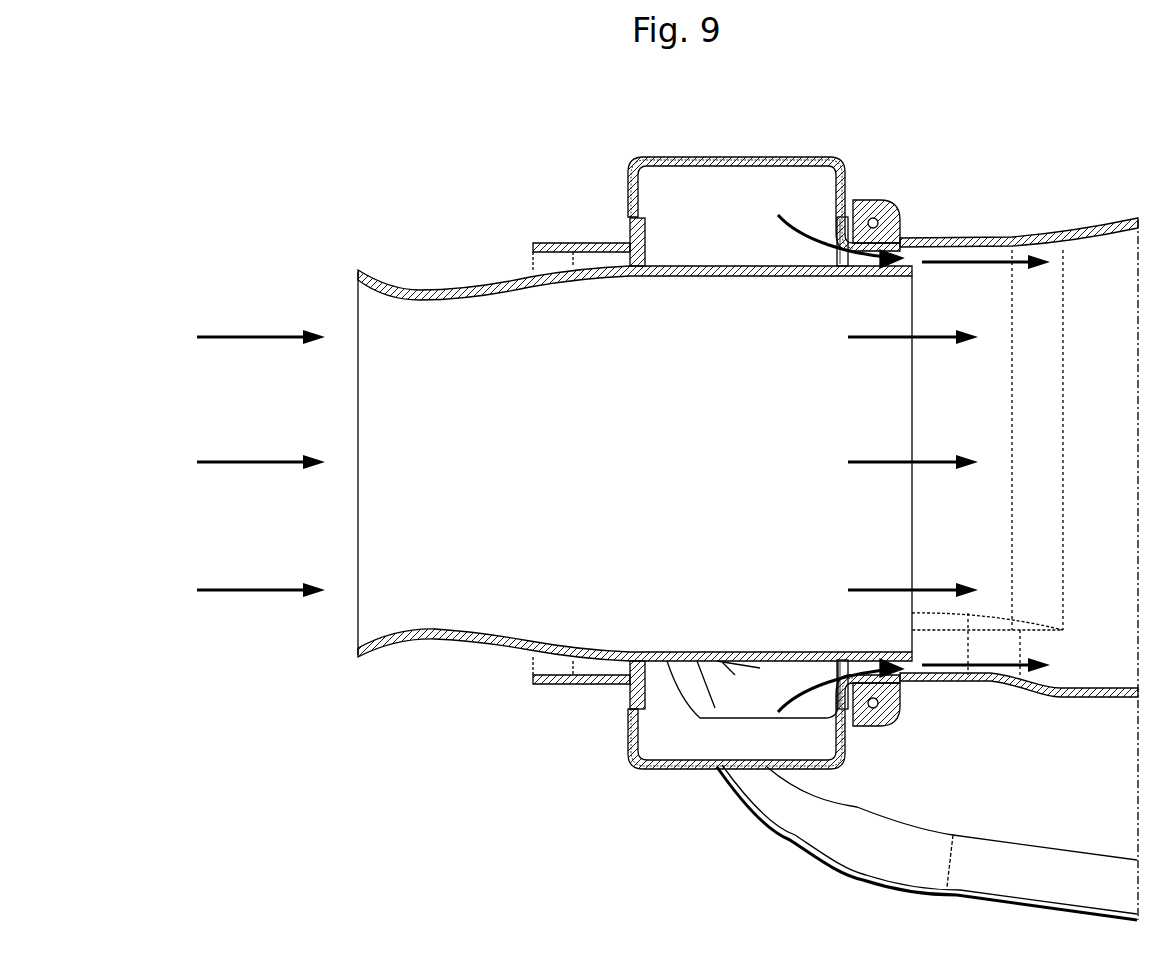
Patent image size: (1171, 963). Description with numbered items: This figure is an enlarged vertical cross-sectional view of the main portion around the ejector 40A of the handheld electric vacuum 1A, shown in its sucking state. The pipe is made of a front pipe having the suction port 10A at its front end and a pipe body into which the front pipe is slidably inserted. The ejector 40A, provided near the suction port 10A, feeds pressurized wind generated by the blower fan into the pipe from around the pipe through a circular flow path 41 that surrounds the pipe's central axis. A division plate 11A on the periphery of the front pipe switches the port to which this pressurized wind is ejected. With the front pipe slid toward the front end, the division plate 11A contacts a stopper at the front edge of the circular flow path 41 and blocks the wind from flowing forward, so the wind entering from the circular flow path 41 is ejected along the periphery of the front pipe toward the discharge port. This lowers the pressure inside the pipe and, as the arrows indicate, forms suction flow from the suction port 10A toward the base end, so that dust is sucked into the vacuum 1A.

The vacuum 1A is at (983, 157).
The suction port 10A is at (358, 618).
The division plate 11A is at (650, 232).
The ejector 40A is at (700, 147).
The circular flow path 41 is at (840, 178).